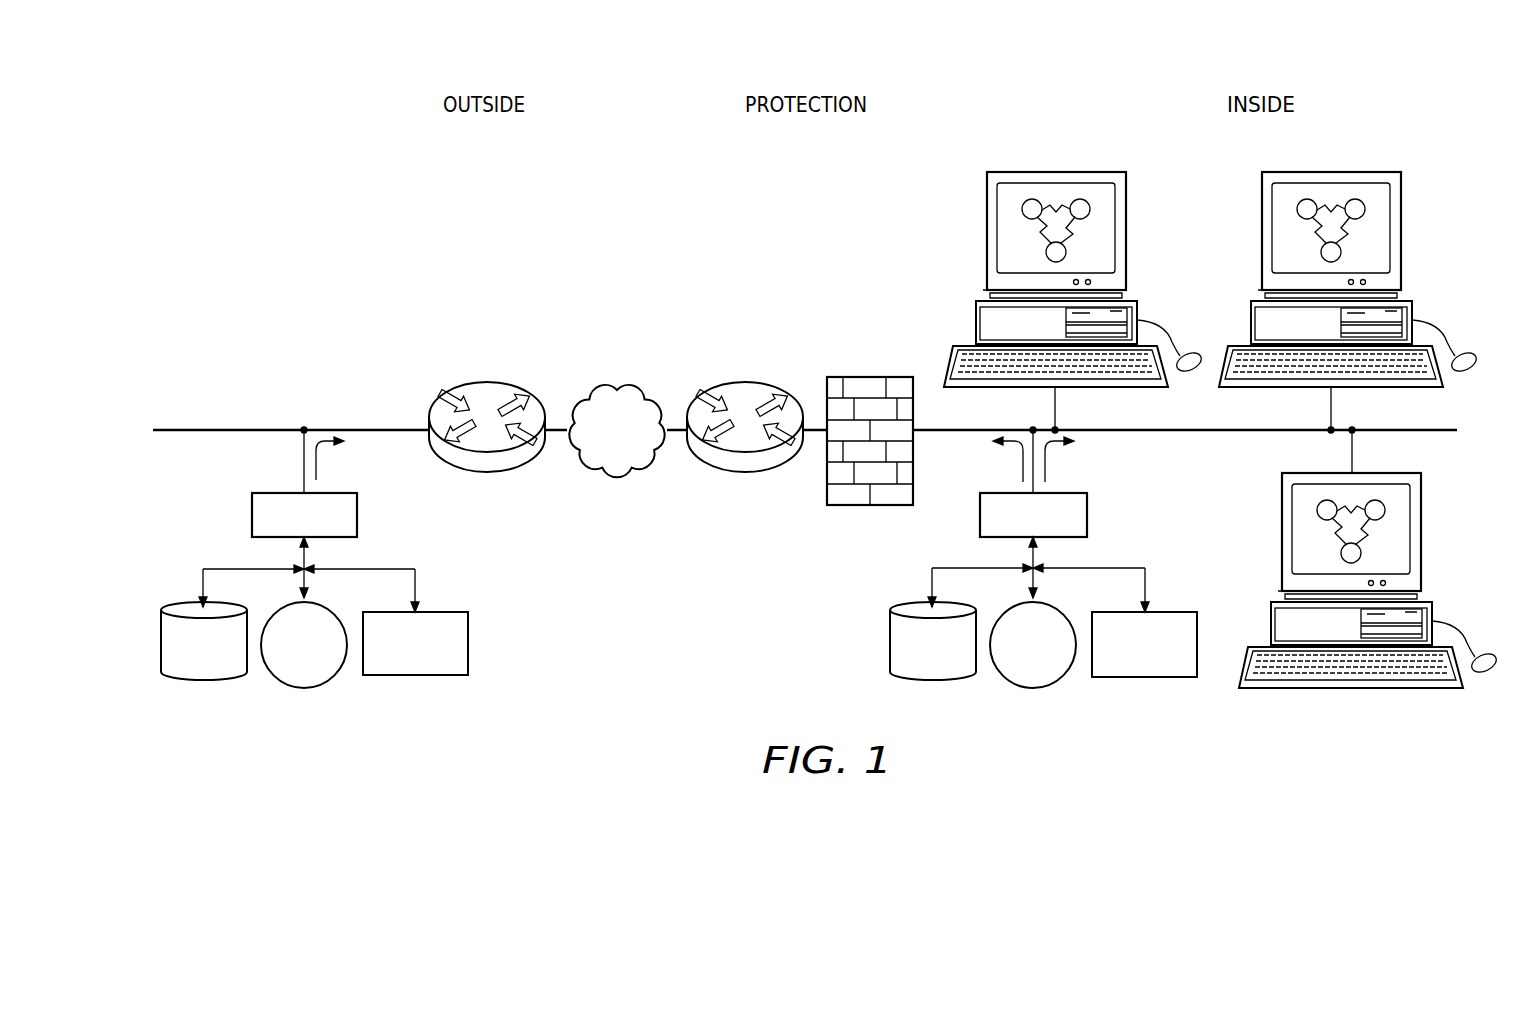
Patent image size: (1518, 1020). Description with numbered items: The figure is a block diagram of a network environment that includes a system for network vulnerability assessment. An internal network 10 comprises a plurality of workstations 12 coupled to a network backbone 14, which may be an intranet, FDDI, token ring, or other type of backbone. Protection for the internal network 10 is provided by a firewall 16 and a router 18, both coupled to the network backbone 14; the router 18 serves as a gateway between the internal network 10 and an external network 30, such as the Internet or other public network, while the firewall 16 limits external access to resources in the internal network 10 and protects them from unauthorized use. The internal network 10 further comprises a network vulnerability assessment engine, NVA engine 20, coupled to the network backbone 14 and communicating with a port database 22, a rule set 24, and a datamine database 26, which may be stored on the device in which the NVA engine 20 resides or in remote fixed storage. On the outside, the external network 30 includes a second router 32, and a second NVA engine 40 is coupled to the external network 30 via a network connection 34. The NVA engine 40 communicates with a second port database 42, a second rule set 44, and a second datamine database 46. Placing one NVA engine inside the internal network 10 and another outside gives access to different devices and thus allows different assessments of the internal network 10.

The internal network 10 is at (1390, 58).
The workstation 12 is at (1126, 232).
The network backbone 14 is at (1208, 432).
The firewall 16 is at (889, 506).
The router 18 is at (745, 472).
The network vulnerability assessment (NVA) engine 20 is at (1087, 514).
The port database 22 is at (933, 682).
The rule set 24 is at (1033, 688).
The datamine database 26 is at (1144, 677).
The external network 30 is at (616, 431).
The second router 32 is at (487, 472).
The network connection 34 is at (387, 430).
The second NVA engine 40 is at (252, 513).
The second port database 42 is at (204, 682).
The second rule set 44 is at (304, 688).
The second datamine database 46 is at (415, 677).